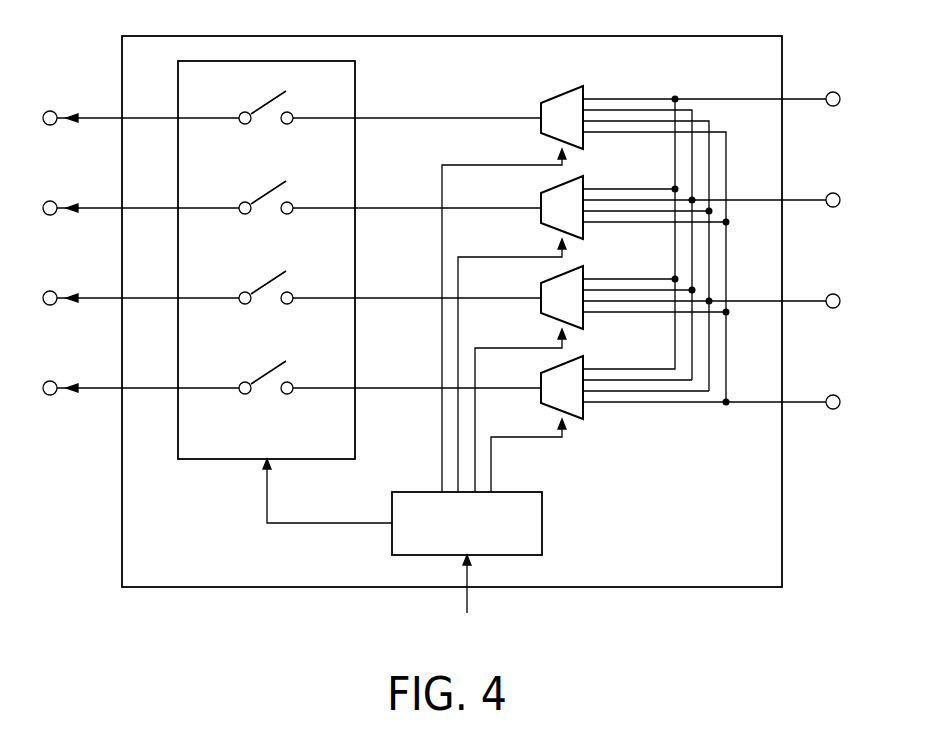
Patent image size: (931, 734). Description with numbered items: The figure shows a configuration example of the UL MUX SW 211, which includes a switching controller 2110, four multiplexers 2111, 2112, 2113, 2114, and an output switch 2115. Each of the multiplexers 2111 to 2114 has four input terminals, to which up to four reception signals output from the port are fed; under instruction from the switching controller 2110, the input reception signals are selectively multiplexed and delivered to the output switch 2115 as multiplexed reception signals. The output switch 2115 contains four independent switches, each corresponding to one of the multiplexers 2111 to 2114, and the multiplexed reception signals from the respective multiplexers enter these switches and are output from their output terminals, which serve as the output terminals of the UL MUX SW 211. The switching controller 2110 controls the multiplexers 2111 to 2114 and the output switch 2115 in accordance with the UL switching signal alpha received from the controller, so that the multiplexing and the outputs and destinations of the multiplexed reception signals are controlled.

The UL MUX SW 211 is at (782, 556).
The switching controller 2110 is at (542, 523).
The multiplexer 2111 is at (583, 86).
The multiplexer 2112 is at (583, 176).
The multiplexer 2113 is at (583, 266).
The multiplexer 2114 is at (583, 356).
The output switch 2115 is at (210, 459).